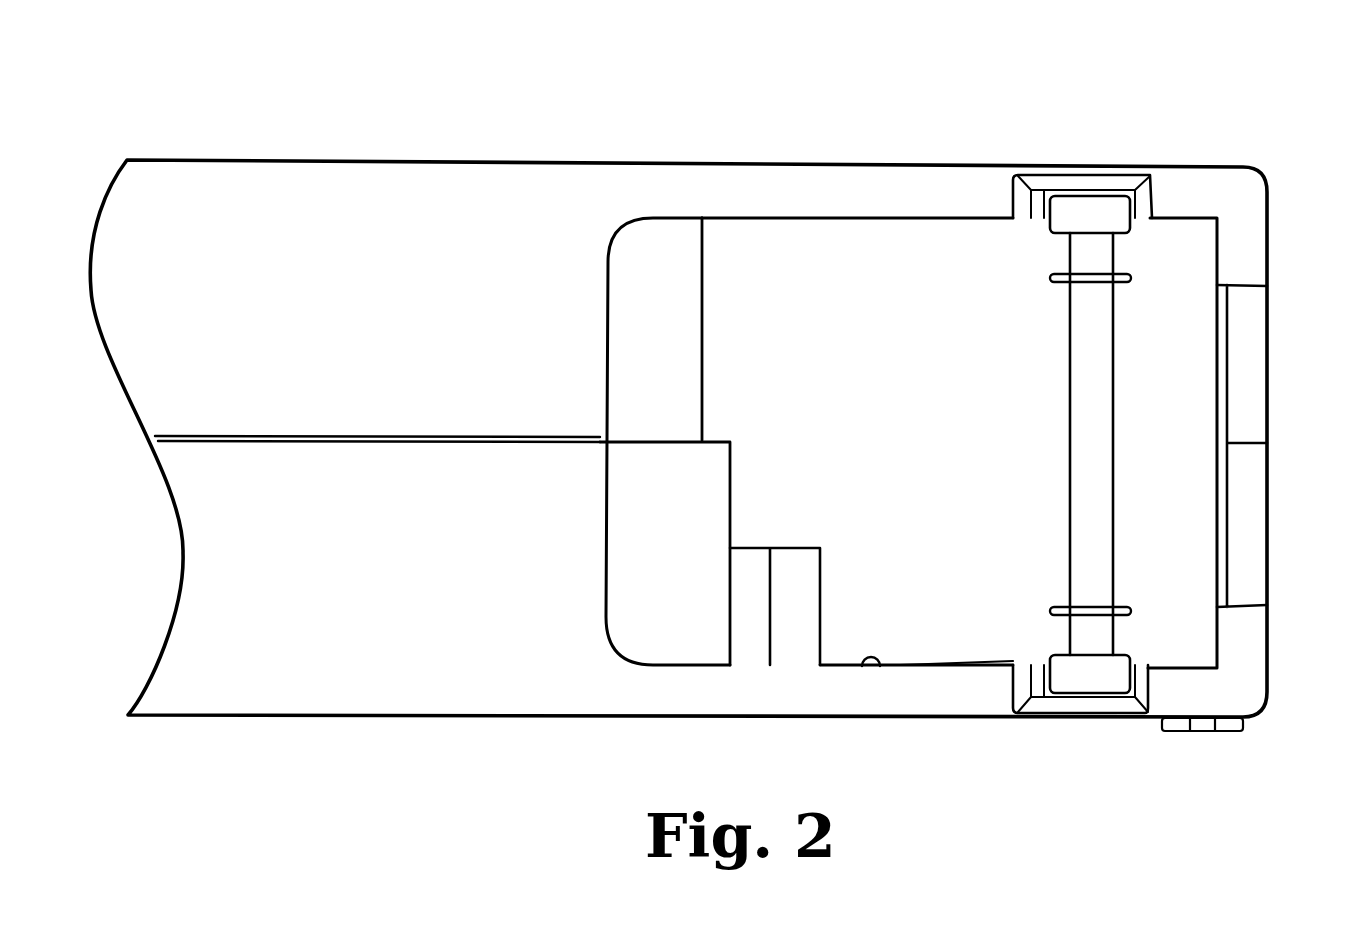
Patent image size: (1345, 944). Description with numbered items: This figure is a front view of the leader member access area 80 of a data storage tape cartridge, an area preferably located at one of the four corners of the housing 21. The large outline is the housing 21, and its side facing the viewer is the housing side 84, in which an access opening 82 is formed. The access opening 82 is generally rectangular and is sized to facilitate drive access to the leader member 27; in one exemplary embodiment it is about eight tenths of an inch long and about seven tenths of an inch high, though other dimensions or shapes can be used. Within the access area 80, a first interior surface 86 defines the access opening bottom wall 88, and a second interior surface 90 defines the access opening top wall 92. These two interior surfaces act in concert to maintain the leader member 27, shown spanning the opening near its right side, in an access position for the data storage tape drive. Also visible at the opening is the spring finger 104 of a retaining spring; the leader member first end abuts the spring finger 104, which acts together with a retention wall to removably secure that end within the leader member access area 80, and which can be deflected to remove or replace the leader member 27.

The housing 21 is at (328, 134).
The housing side 84 is at (291, 258).
The leader member access area 80 is at (1123, 129).
The access opening 82 is at (766, 206).
The second interior surface 90 is at (845, 224).
The access opening top wall 92 is at (947, 201).
The access opening bottom wall 88 is at (947, 685).
The first interior surface 86 is at (862, 666).
The leader member 27 is at (1137, 405).
The spring finger 104 is at (1137, 698).